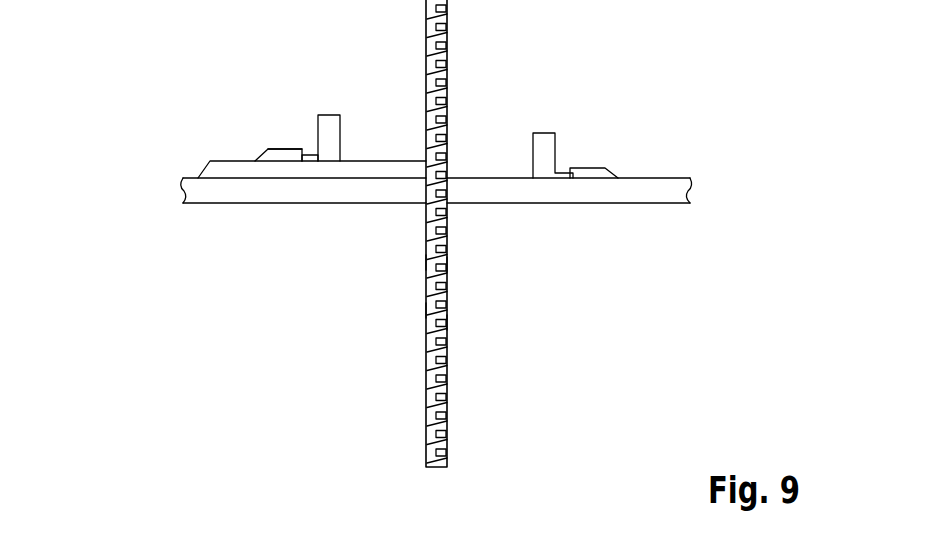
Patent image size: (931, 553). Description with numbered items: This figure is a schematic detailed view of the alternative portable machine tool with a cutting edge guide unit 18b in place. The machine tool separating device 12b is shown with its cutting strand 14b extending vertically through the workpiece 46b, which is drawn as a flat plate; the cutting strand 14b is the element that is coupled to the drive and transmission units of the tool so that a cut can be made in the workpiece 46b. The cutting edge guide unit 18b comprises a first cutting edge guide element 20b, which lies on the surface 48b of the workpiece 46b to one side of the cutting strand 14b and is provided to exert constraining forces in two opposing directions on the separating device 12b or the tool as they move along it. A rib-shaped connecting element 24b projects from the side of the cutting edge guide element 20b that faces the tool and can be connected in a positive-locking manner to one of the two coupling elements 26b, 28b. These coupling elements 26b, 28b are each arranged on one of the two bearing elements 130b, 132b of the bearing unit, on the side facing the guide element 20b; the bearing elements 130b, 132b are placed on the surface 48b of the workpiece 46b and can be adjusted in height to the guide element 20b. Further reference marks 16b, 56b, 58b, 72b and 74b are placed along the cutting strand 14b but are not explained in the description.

The machine tool separating device 12b is at (515, 449).
The cutting strand 14b is at (448, 368).
The outer surface of rod 16b is at (426, 385).
The cutting edge guide unit 18b is at (175, 166).
The first cutting edge guide element 20b is at (226, 168).
The rib-shaped connecting element 24b is at (316, 163).
The coupling element 26b is at (300, 152).
The coupling element 28b is at (567, 172).
The workpiece 46b is at (658, 190).
The surface of workpiece 48b is at (667, 178).
The first side surface of rod 56b is at (424, 262).
The second side surface of rod 58b is at (450, 264).
The first contact region 72b is at (426, 310).
The second contact region 74b is at (448, 322).
The bearing element 130b is at (587, 170).
The bearing element 132b is at (287, 150).